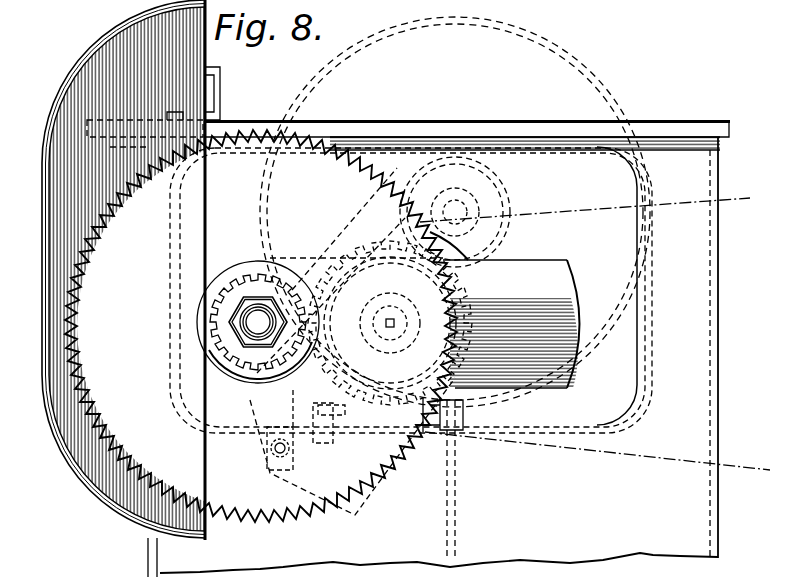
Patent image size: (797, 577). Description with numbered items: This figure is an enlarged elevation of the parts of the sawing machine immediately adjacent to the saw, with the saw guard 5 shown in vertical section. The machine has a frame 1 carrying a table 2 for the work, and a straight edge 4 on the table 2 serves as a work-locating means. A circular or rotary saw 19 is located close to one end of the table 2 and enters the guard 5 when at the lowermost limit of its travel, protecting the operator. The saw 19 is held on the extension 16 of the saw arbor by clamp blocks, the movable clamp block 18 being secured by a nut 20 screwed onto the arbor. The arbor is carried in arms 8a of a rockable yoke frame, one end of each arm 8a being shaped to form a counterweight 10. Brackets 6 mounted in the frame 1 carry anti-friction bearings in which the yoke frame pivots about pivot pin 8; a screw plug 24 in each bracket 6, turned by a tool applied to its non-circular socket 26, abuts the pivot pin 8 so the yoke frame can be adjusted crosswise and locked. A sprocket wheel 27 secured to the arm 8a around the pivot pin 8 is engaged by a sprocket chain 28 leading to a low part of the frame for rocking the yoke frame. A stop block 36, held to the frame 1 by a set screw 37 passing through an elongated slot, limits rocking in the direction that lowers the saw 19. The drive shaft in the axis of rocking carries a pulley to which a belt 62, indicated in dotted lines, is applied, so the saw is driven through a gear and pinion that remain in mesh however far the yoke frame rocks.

The frame 1 is at (152, 556).
The table 2 is at (528, 127).
The straight edge 4 is at (220, 92).
The saw guard 5 is at (42, 158).
The bracket 6 is at (463, 404).
The pivot pin 8 is at (396, 310).
The arm of yoke frame 8a is at (307, 251).
The counterweight 10 is at (580, 312).
The arbor extension 16 is at (365, 255).
The movable clamp block 18 is at (200, 323).
The rotary saw 19 is at (610, 88).
The nut 20 is at (258, 346).
The screw plug 24 is at (386, 309).
The non-circular socket 26 is at (395, 321).
The sprocket wheel 27 is at (315, 323).
The sprocket chain 28 is at (457, 512).
The block 36 is at (292, 470).
The set screw 37 is at (290, 450).
The belt 62 is at (665, 462).